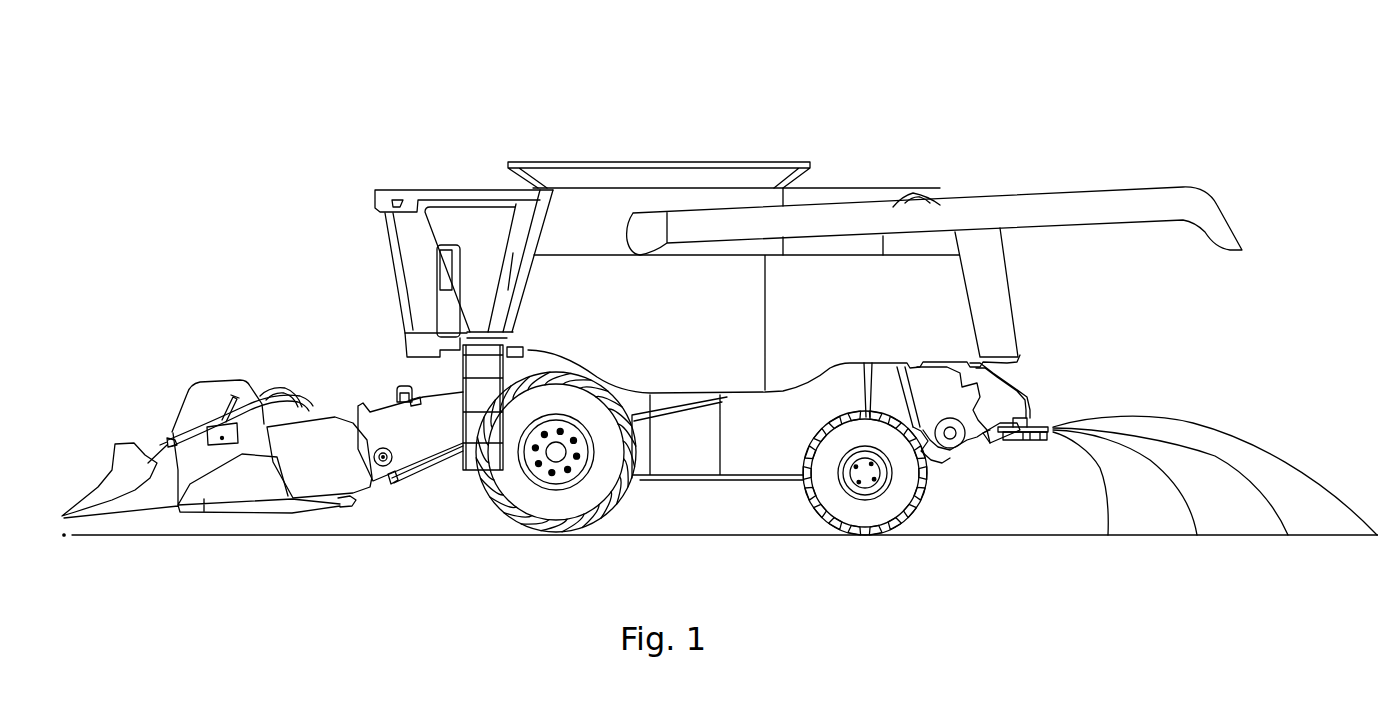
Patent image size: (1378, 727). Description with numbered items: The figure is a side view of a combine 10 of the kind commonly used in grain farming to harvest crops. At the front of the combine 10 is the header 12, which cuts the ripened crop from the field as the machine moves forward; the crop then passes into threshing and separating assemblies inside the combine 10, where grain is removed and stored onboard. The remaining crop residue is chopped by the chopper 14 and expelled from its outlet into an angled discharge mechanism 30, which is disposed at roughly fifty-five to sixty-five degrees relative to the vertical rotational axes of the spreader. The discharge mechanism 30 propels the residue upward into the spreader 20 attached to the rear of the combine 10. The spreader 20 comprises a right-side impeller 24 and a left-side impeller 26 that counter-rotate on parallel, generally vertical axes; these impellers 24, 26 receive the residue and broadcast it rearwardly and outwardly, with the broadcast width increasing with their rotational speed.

The combine 10 is at (347, 167).
The header 12 is at (147, 422).
The chopper 14 is at (957, 453).
The spreader 20 is at (1045, 407).
The right-side impeller 24 is at (1045, 482).
The left-side impeller 26 is at (1033, 445).
The discharge mechanism 30 is at (988, 447).